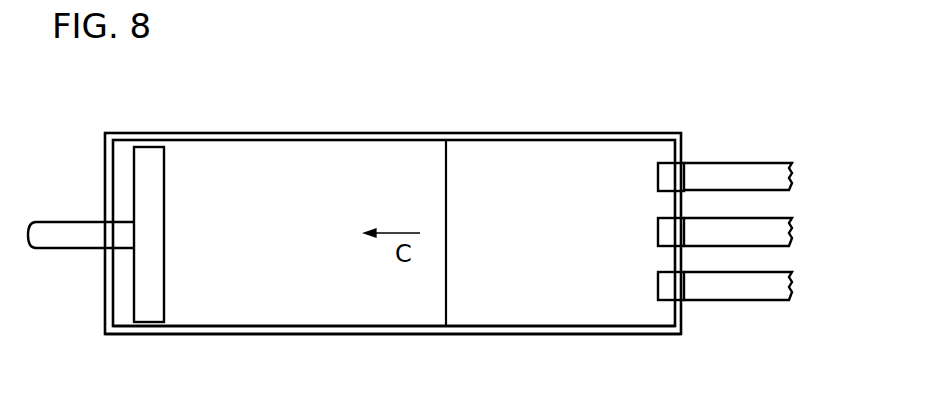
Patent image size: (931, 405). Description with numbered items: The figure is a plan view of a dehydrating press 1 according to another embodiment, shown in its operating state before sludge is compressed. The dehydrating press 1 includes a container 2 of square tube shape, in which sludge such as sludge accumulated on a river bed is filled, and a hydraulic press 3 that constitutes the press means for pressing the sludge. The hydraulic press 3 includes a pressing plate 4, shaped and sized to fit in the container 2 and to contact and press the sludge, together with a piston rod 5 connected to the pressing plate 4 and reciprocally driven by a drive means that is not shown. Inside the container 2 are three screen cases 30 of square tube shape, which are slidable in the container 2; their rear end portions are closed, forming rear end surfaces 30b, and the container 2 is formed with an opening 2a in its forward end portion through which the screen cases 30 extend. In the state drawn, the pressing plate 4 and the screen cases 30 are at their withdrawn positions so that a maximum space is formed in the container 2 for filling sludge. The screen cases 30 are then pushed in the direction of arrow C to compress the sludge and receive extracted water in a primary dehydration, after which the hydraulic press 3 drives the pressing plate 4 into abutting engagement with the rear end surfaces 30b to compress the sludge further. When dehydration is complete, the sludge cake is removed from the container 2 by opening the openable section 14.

The dehydrating press 1 is at (393, 206).
The container 2 is at (432, 133).
The opening 2a is at (682, 162).
The hydraulic press 3 is at (173, 208).
The pressing plate 4 is at (150, 152).
The piston rod 5 is at (70, 229).
The openable section 14 is at (525, 305).
The screen cases 30 is at (757, 171).
The rear end surfaces 30b is at (658, 283).